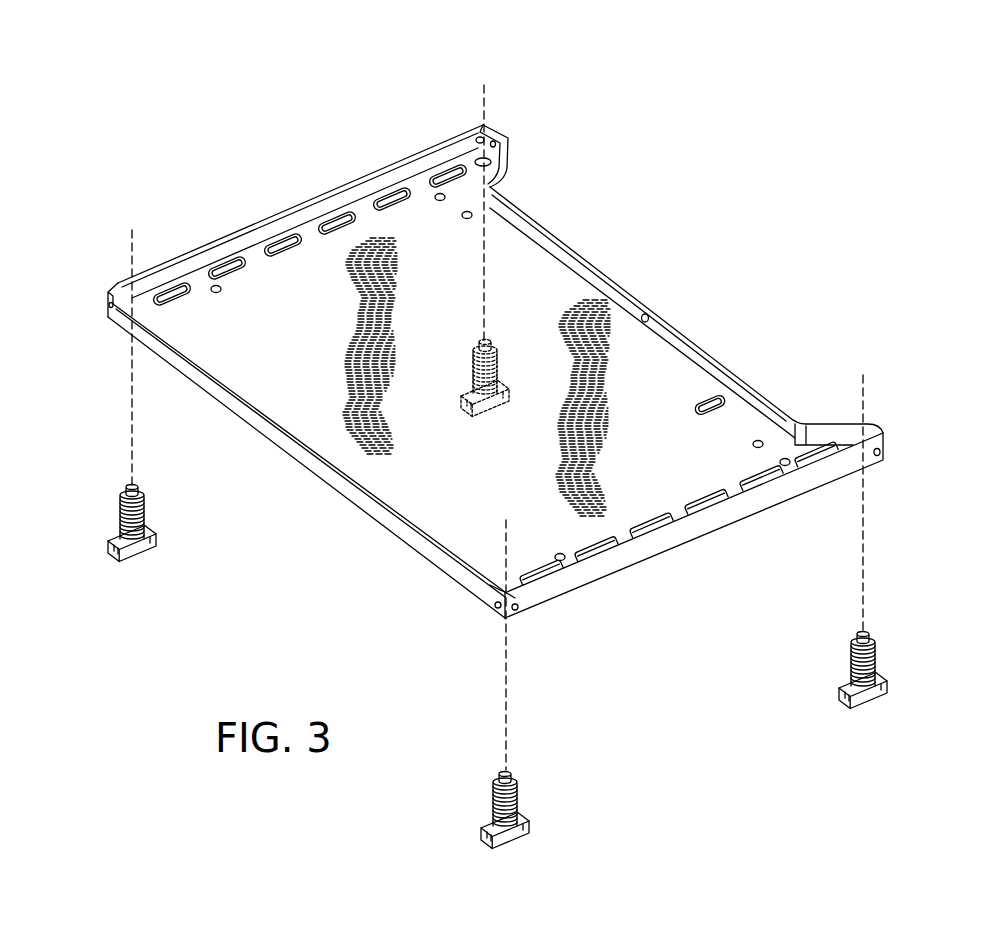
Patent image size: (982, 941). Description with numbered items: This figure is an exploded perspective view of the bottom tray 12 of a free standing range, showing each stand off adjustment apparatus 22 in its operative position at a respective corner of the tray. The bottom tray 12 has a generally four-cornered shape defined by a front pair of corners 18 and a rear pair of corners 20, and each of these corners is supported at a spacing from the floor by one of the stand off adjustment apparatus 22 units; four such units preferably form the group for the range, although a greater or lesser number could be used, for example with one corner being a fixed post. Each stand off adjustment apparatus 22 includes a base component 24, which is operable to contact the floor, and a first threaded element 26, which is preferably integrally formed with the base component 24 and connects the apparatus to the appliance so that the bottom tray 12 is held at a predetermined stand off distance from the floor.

The bottom tray 12 is at (495, 369).
The front pair of corners 18 is at (495, 598).
The rear pair of corners 20 is at (512, 138).
The stand off adjustment apparatus 22 is at (99, 550).
The base component 24 is at (100, 543).
The first threaded element 26 is at (132, 512).